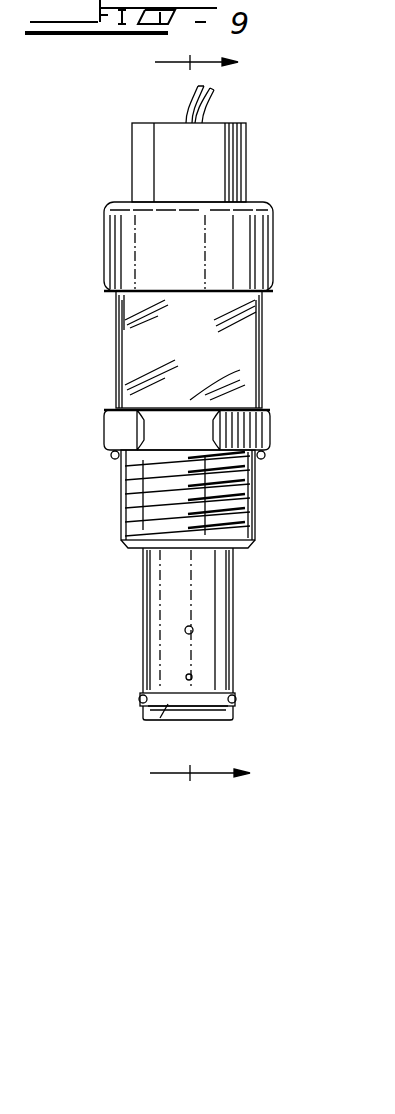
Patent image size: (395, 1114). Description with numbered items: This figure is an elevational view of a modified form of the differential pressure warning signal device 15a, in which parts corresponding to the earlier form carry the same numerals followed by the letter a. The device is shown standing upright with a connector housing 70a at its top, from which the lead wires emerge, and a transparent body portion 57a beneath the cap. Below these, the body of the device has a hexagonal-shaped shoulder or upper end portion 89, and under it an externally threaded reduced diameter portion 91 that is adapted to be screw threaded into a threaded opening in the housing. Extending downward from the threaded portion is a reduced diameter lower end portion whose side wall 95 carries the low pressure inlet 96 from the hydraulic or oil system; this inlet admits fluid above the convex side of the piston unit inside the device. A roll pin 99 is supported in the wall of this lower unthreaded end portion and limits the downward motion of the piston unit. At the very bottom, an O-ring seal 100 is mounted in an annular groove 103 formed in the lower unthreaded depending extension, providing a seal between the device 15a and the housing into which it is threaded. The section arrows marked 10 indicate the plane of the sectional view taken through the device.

The section line 10 is at (189, 426).
The connector housing 70a is at (238, 160).
The differential pressure warning signal device 15a is at (250, 265).
The transparent body 57a is at (280, 338).
The hexagonal-shaped shoulder 89 is at (262, 430).
The externally threaded reduced diameter portion 91 is at (255, 500).
The side wall of lower end portion 95 is at (222, 597).
The low pressure inlet 96 is at (194, 631).
The roll pin 99 is at (192, 680).
The O-ring seal 100 is at (238, 705).
The annular groove 103 is at (166, 747).